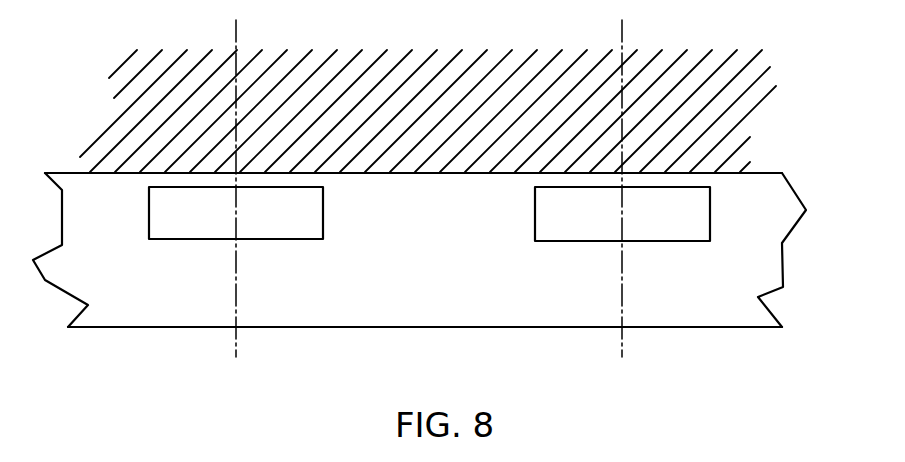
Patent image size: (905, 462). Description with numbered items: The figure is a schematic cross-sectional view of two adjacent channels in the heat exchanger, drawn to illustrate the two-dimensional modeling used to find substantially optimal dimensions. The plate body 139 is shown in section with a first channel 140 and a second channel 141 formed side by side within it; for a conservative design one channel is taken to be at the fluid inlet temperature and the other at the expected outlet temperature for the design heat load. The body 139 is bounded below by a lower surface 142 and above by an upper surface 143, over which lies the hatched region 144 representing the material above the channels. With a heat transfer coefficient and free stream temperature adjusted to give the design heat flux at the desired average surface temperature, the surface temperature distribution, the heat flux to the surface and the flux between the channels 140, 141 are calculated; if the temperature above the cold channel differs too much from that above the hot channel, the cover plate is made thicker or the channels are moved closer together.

The substrate 139 is at (447, 278).
The first electrode 140 is at (265, 230).
The second electrode 141 is at (645, 228).
The bottom surface of substrate 142 is at (418, 327).
The top surface / interface of substrate 143 is at (365, 173).
The hatched upper layer 144 is at (441, 140).